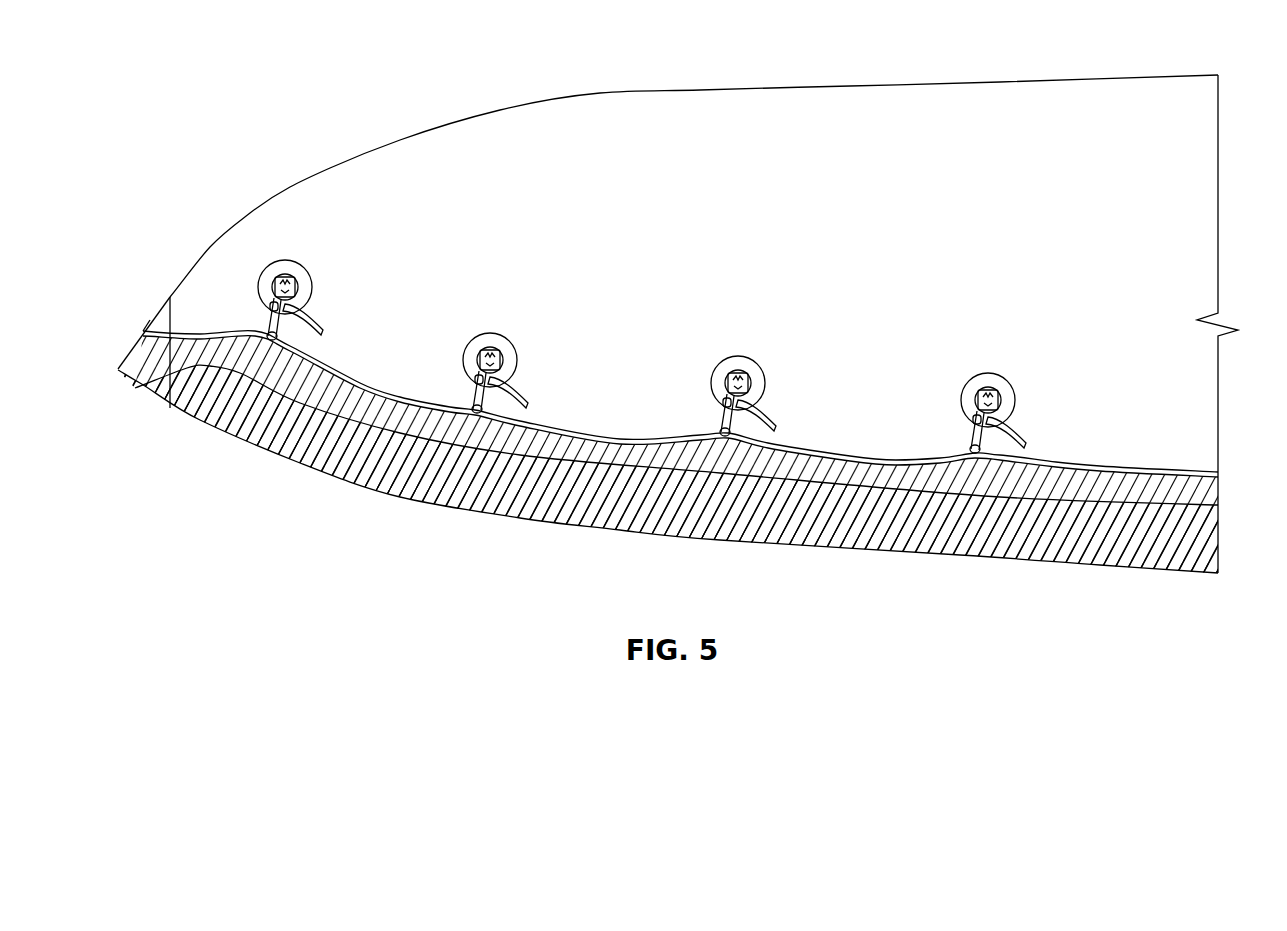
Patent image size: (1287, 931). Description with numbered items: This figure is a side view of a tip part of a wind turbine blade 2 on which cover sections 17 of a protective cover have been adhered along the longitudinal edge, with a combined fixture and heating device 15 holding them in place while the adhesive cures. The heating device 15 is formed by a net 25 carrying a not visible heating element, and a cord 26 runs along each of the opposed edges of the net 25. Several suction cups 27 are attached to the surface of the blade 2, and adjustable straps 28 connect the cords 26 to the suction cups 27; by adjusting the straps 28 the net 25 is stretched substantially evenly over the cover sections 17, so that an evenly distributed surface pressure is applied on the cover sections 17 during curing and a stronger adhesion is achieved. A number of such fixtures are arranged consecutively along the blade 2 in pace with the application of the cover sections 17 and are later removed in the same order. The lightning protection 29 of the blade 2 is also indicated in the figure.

The wind turbine blade 2 is at (978, 92).
The heating device 15 is at (1207, 494).
The cover section 17 is at (821, 552).
The net 25 is at (1100, 490).
The cord 26 is at (1162, 477).
The suction cup 27 is at (746, 365).
The adjustable strap 28 is at (722, 412).
The lightning protection 29 is at (165, 318).